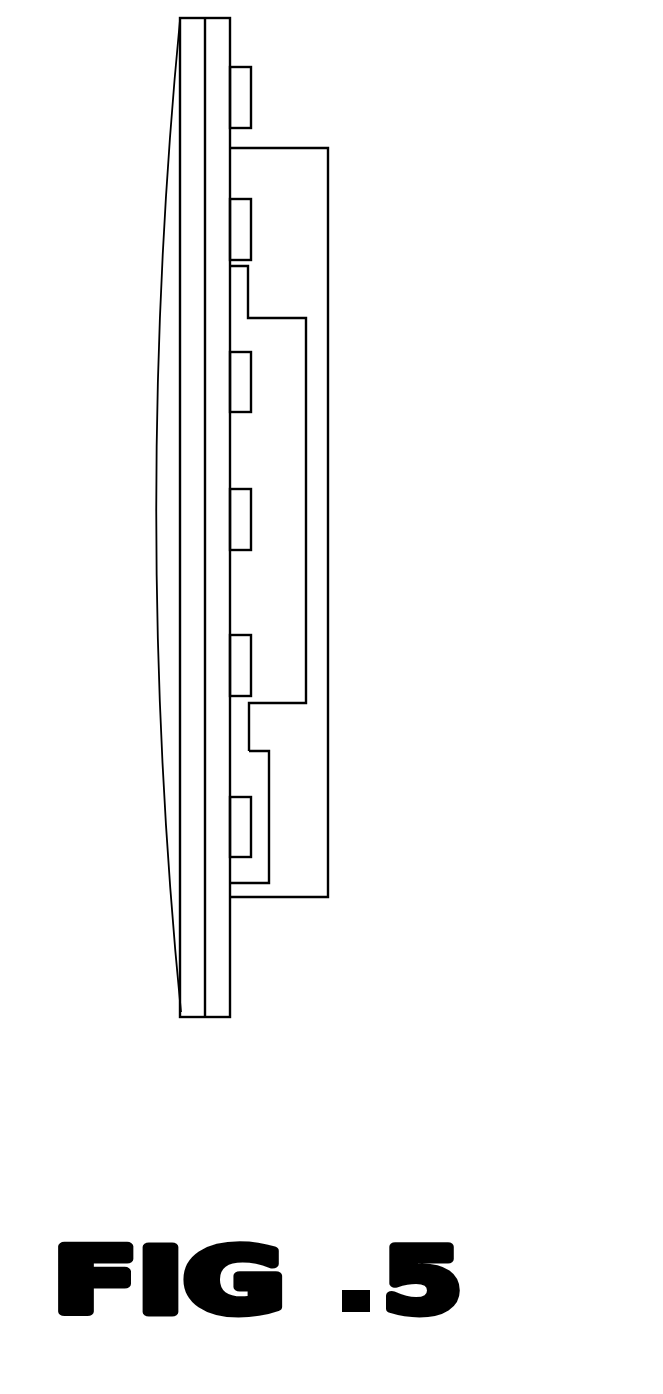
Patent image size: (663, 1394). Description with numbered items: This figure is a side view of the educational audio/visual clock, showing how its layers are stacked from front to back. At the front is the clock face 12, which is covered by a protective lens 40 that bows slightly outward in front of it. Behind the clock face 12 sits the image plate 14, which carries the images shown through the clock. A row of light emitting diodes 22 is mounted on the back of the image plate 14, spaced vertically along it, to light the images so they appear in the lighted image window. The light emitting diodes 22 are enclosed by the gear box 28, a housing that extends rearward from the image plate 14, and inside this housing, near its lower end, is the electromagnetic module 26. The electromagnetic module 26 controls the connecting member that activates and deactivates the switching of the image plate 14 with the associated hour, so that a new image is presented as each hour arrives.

The clock face 12 is at (178, 478).
The image plate 14 is at (230, 52).
The light emitting diode (LED) 22 is at (251, 352).
The electromagnetic module 26 is at (270, 793).
The gear box 28 is at (294, 379).
The protective lens 40 is at (158, 623).